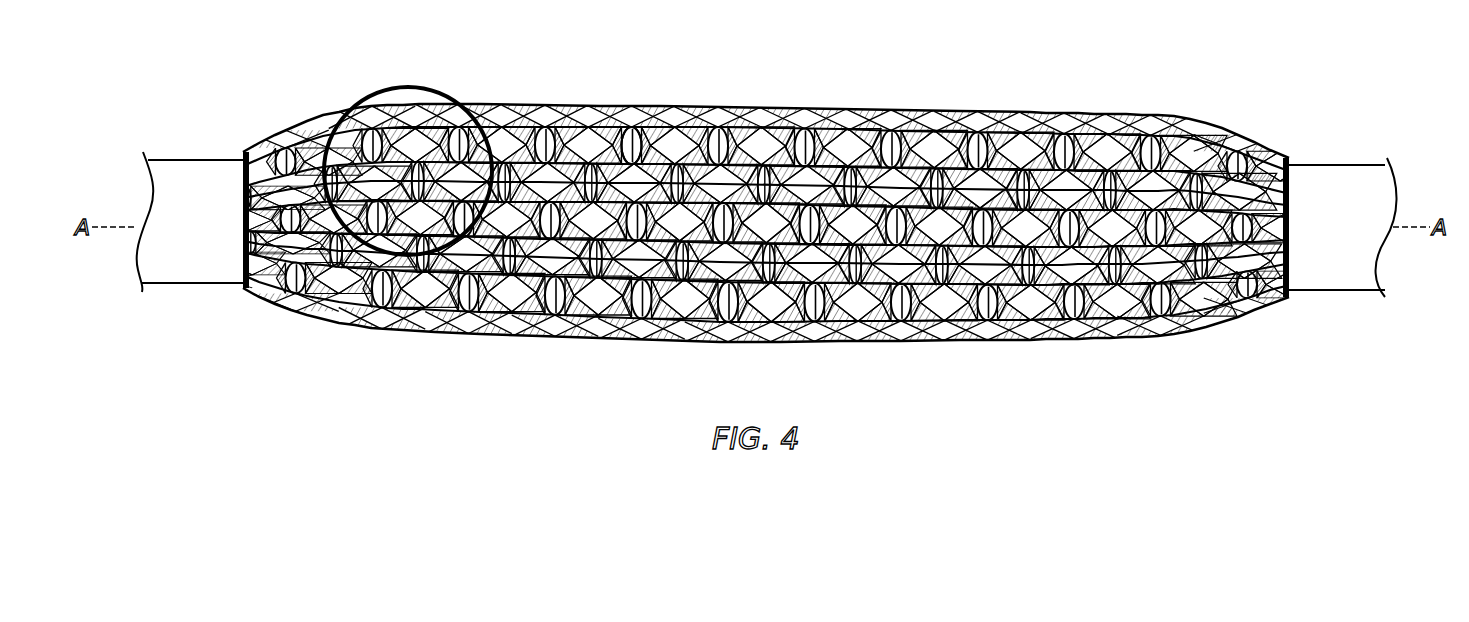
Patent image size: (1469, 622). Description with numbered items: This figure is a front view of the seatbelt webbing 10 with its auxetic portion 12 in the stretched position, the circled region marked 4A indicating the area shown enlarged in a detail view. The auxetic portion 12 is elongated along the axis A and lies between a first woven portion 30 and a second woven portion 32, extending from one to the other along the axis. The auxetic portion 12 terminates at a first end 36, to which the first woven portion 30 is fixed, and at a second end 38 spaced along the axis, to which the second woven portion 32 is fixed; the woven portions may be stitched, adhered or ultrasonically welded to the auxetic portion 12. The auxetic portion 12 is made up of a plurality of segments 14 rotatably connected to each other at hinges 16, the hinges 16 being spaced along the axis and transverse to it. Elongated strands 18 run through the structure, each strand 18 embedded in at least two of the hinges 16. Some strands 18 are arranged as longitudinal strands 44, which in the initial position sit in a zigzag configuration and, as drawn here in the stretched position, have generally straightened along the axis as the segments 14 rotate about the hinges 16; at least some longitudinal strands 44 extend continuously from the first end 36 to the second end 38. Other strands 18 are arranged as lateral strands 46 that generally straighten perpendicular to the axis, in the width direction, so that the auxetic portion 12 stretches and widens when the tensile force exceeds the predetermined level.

The seatbelt webbing 10 is at (1282, 99).
The auxetic portion 12 is at (1062, 376).
The segments 14 is at (452, 322).
The hinges 16 is at (640, 333).
The strands 18 is at (631, 128).
The longitudinal strands 44 is at (632, 145).
The lateral strands 46 is at (800, 152).
The first woven portion 30 is at (205, 177).
The second woven portion 32 is at (1330, 178).
The first end 36 is at (242, 258).
The second end 38 is at (1290, 260).
The detail view circle 4A is at (372, 100).